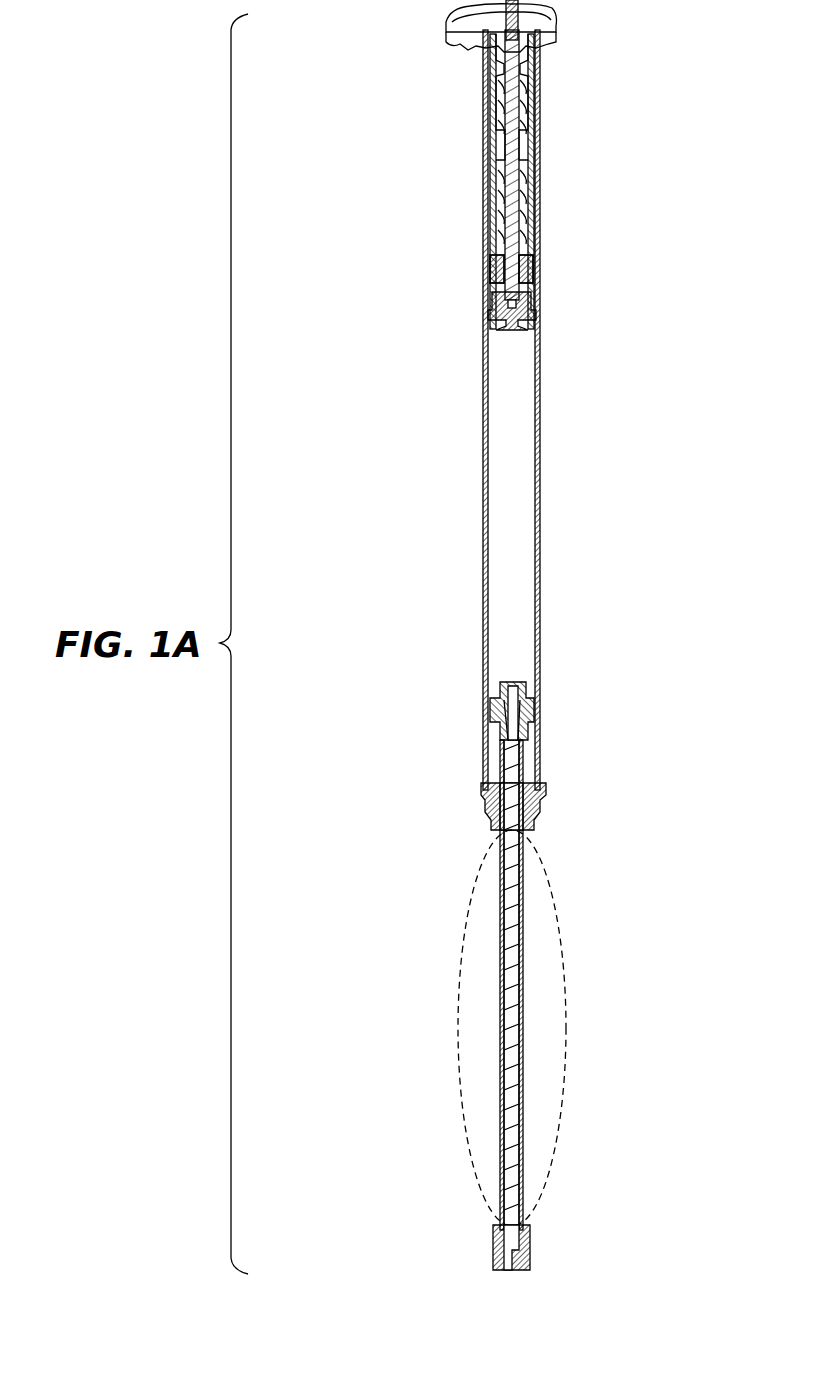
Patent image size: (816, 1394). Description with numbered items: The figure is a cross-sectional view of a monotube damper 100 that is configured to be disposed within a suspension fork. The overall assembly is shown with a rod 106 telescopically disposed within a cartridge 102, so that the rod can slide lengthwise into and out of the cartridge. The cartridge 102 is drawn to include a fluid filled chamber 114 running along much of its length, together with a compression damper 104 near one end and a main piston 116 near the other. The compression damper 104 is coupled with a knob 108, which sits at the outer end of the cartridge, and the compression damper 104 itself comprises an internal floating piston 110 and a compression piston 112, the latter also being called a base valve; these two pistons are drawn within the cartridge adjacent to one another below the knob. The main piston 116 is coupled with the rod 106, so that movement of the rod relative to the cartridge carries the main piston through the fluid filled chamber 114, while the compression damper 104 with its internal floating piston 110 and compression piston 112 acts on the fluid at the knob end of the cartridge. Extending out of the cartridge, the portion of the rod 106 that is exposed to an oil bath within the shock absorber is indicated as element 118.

The monotube damper 100 is at (683, 66).
The cartridge 102 is at (640, 20).
The compression damper 104 is at (552, 44).
The rod 106 is at (602, 1272).
The knob 108 is at (448, 26).
The internal floating piston (IFP) 110 is at (470, 262).
The compression piston 112 is at (470, 306).
The fluid filled chamber 114 is at (496, 503).
The main piston 116 is at (470, 700).
The exposed portion of the rod 118 is at (460, 997).